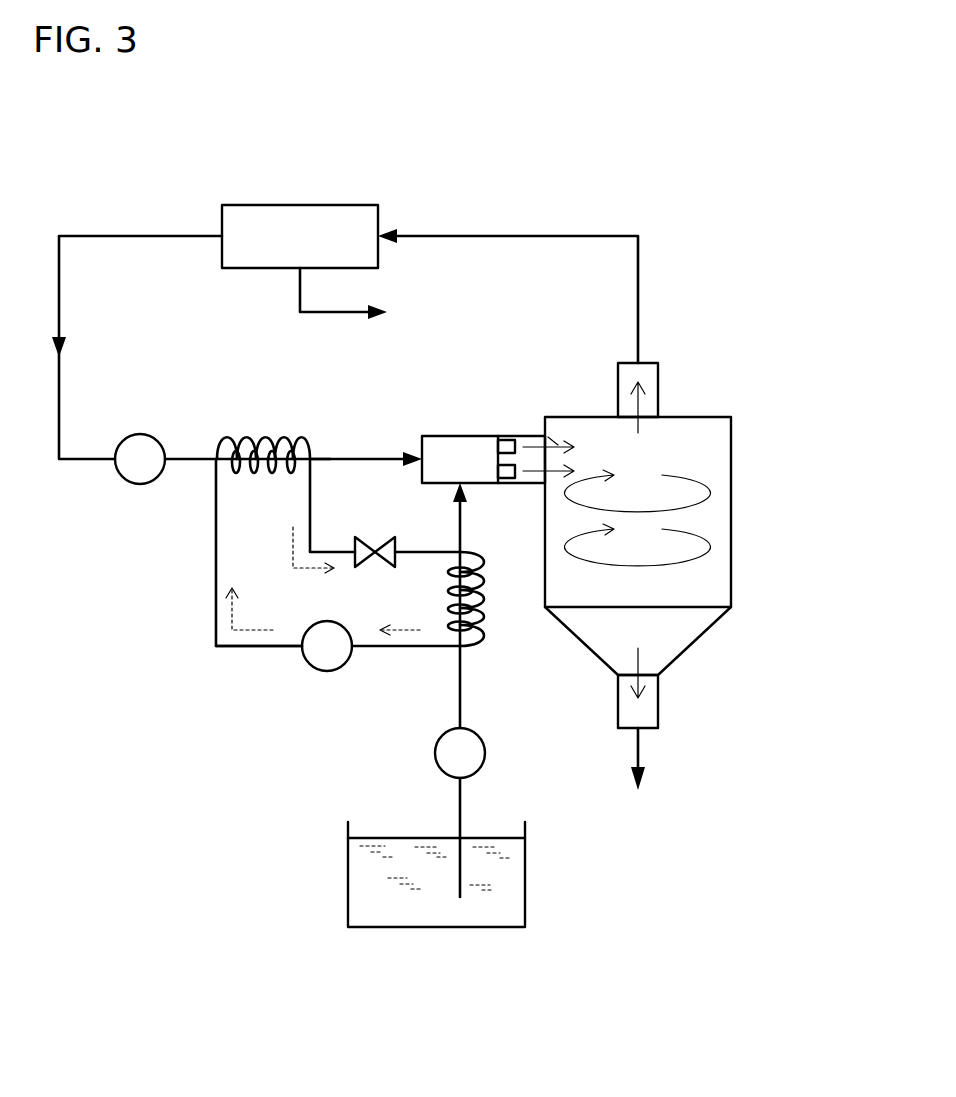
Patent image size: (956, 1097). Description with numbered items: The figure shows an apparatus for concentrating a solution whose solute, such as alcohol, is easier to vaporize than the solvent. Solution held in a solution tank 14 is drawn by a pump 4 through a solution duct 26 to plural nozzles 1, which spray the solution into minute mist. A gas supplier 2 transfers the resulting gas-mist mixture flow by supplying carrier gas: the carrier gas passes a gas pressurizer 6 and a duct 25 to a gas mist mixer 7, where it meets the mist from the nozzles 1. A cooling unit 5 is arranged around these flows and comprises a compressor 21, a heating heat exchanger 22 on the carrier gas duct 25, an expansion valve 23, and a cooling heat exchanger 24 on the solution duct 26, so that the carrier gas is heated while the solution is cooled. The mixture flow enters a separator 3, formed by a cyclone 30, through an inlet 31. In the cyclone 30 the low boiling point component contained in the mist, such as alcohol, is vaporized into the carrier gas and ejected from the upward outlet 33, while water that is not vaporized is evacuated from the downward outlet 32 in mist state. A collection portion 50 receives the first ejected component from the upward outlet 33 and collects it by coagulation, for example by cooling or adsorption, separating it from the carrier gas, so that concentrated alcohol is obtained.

The collection portion 50 is at (307, 205).
The gas supplier 2 is at (227, 358).
The gas pressurizer 6 is at (167, 448).
The gas mist mixer 7 is at (447, 436).
The duct 25 is at (335, 455).
The heating heat exchanger 22 is at (260, 478).
The expansion valve 23 is at (372, 537).
The compressor 21 is at (305, 667).
The cooling heat exchanger 24 is at (487, 612).
The solution duct 26 is at (460, 692).
The cooling unit 5 is at (358, 703).
The pump 4 is at (435, 758).
The solution tank 14 is at (525, 885).
The nozzle 1 is at (510, 436).
The inlet 31 is at (548, 437).
The upward outlet 33 is at (645, 357).
The separator 3 is at (687, 541).
The cyclone 30 is at (731, 500).
The downward outlet 32 is at (648, 732).